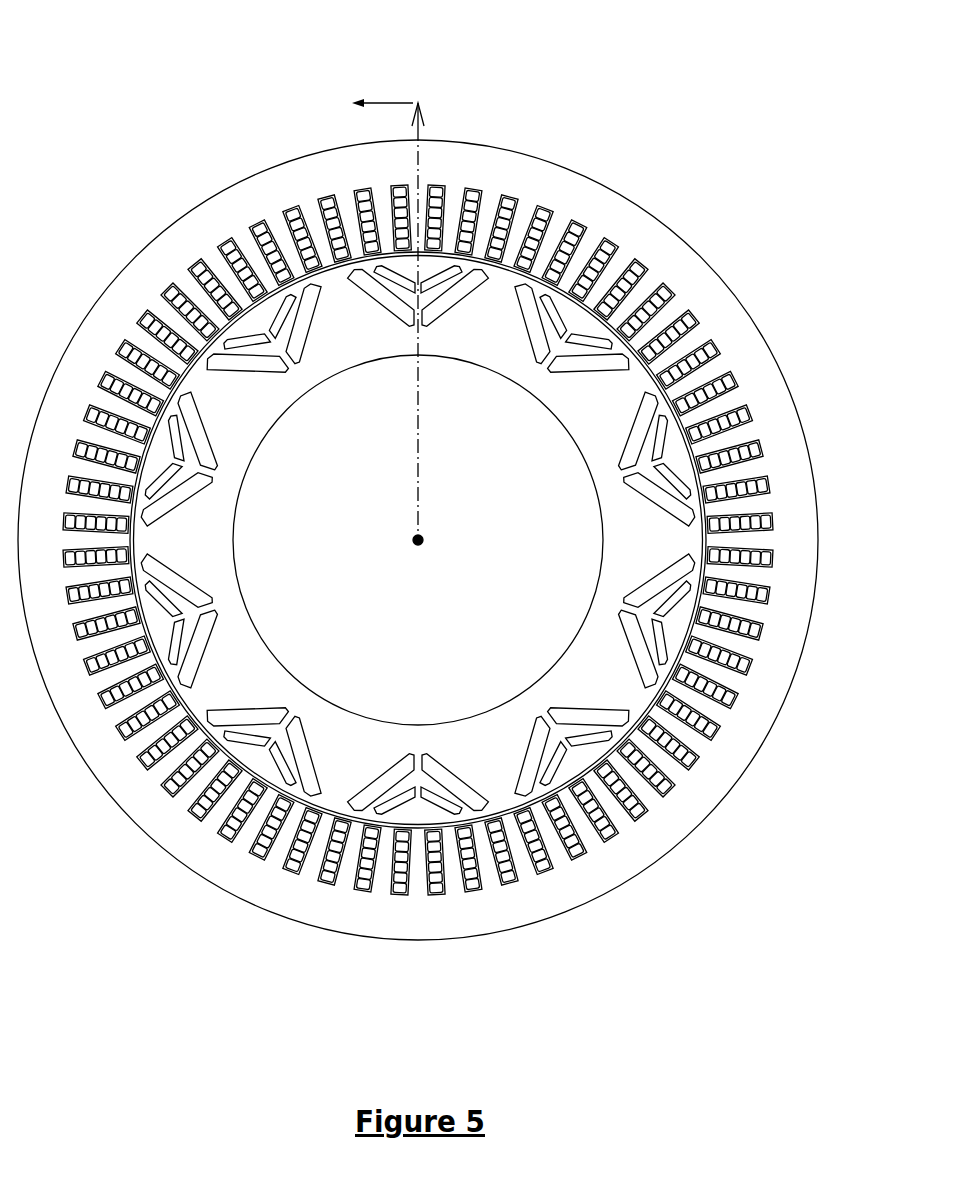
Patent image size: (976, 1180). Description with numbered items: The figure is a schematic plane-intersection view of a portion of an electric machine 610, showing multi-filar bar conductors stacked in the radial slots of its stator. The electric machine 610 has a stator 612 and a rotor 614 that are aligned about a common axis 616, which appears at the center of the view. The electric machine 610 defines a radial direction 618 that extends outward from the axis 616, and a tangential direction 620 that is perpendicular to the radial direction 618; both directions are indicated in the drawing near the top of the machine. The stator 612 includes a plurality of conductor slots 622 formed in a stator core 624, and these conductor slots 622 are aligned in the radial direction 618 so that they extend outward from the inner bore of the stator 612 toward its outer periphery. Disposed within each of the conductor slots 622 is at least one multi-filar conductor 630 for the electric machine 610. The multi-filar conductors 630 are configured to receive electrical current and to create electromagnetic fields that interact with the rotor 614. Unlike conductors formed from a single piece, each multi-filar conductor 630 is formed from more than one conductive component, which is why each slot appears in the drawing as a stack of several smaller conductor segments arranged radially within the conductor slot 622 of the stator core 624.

The electric machine 610 is at (98, 66).
The stator 612 is at (640, 227).
The rotor 614 is at (495, 370).
The axis 616 is at (424, 542).
The radial direction 618 is at (418, 136).
The tangential direction 620 is at (413, 101).
The conductor slots 622 is at (338, 193).
The stator core 624 is at (720, 367).
The multi-filar conductor 630 is at (262, 231).